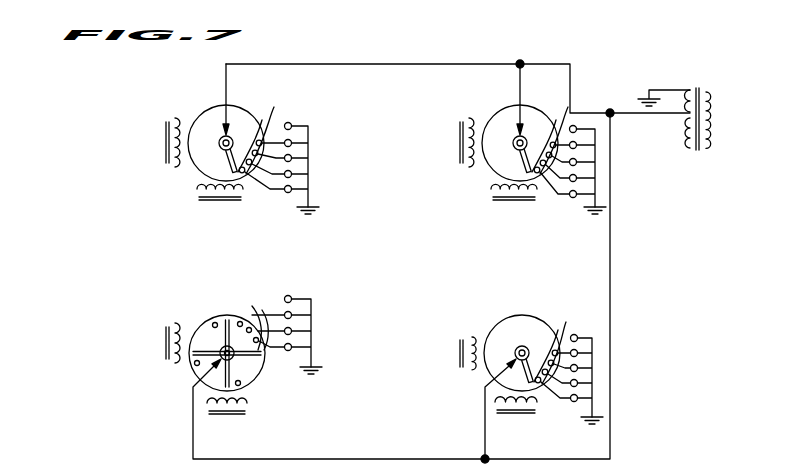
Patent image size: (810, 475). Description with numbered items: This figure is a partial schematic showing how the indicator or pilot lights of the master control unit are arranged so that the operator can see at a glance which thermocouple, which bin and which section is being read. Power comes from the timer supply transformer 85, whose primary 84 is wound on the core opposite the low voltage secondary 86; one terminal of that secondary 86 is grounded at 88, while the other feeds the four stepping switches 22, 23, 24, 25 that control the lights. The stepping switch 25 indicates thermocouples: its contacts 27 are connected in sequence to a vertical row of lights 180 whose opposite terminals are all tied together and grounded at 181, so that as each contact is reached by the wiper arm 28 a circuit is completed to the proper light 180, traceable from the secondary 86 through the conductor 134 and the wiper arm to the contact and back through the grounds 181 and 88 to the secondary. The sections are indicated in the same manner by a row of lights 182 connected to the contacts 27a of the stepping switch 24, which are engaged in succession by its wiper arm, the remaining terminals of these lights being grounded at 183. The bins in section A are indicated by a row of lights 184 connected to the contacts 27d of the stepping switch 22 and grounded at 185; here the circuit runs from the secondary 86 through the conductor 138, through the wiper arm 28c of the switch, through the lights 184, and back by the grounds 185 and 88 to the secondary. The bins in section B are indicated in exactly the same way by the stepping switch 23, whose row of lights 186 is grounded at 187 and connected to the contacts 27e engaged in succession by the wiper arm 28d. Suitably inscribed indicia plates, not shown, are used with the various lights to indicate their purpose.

The stepping switch 22 is at (217, 137).
The stepping switch 23 is at (509, 140).
The stepping switch 24 is at (218, 346).
The stepping switch 25 is at (524, 340).
The contacts 27 is at (562, 330).
The contacts 27a is at (264, 318).
The contacts 27d is at (288, 101).
The contacts 27e is at (556, 120).
The wiper arm 28 is at (520, 373).
The wiper arm 28c is at (228, 160).
The wiper arm 28d is at (522, 162).
The conductor 134 is at (486, 447).
The conductor 138 is at (405, 64).
The indicator lights 180 is at (578, 338).
The ground 181 is at (604, 416).
The indicator lights 182 is at (292, 299).
The ground 183 is at (320, 367).
The indicator lights 184 is at (293, 125).
The ground 185 is at (317, 206).
The indicator lights 186 is at (577, 129).
The ground 187 is at (580, 213).
The primary 84 is at (712, 118).
The timer supply transformer 85 is at (704, 85).
The low voltage secondary 86 is at (688, 88).
The ground 88 is at (646, 95).